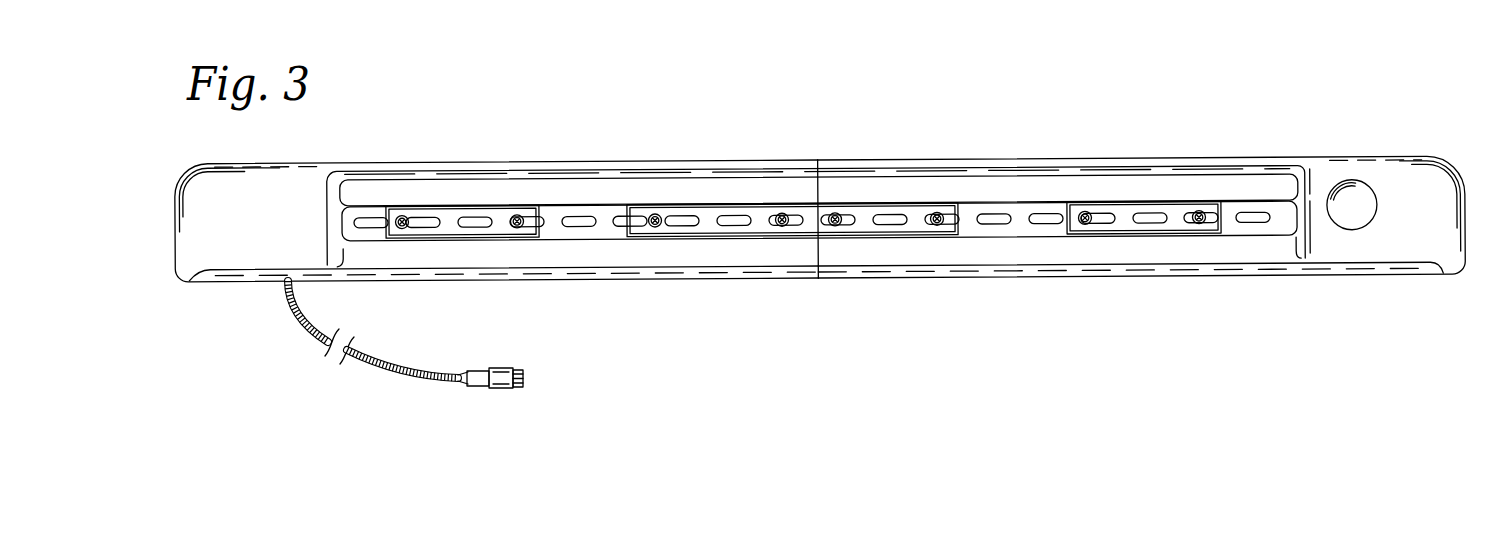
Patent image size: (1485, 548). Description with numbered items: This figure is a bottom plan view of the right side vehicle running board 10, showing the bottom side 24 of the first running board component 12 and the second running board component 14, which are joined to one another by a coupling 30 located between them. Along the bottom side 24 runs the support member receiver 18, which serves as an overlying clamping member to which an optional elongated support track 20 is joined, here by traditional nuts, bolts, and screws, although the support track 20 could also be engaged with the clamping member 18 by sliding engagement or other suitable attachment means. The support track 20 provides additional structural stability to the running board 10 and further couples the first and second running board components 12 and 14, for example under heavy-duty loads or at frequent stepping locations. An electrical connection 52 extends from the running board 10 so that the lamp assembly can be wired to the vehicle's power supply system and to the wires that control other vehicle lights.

The vehicle running board 10 is at (609, 97).
The first running board component 12 is at (1038, 278).
The second running board component 14 is at (597, 281).
The support member receiver 18 is at (563, 212).
The elongated support track 20 is at (413, 207).
The bottom side 24 is at (675, 190).
The coupling 30 is at (820, 162).
The electrical connection 52 is at (370, 367).